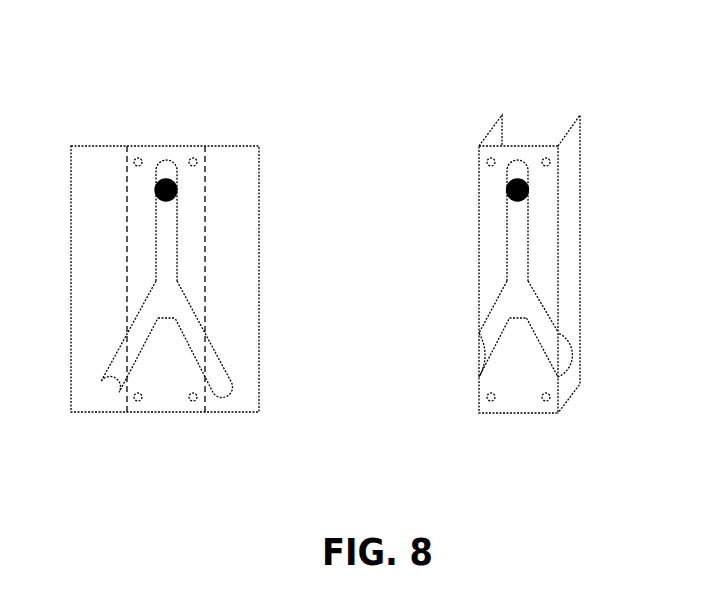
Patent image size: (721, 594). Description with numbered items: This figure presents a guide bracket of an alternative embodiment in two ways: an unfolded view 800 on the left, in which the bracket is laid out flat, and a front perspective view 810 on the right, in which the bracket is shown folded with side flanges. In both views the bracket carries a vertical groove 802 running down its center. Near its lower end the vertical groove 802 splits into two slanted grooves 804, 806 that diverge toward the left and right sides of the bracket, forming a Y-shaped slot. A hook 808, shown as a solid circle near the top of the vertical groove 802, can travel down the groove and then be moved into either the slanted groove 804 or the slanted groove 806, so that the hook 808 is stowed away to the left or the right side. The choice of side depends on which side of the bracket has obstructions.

The unfolded view 800 is at (167, 80).
The front perspective view 810 is at (545, 80).
The vertical groove 802 is at (403, 239).
The slanted groove 804 is at (263, 336).
The slanted groove 806 is at (437, 339).
The hook 808 is at (416, 180).